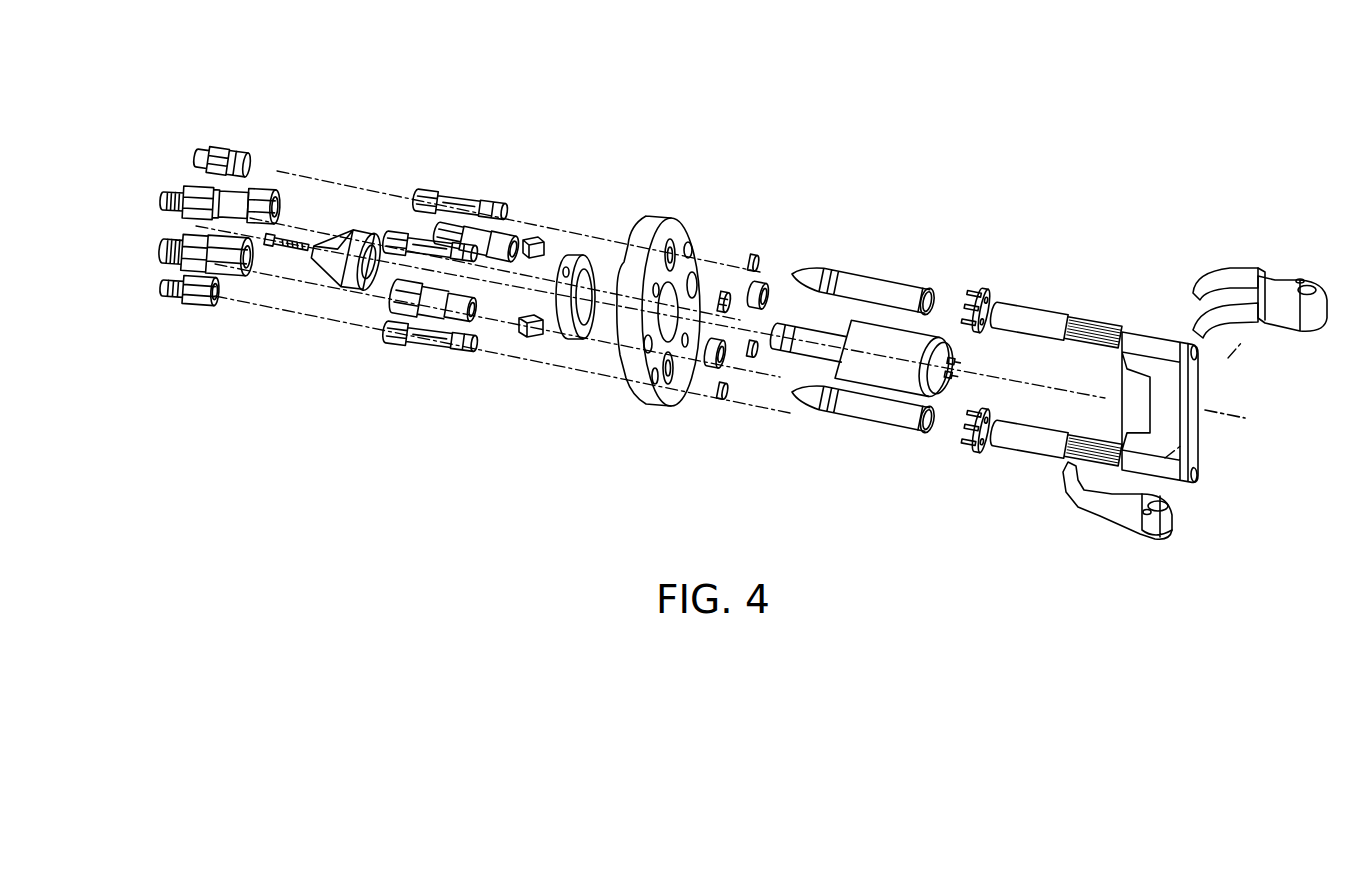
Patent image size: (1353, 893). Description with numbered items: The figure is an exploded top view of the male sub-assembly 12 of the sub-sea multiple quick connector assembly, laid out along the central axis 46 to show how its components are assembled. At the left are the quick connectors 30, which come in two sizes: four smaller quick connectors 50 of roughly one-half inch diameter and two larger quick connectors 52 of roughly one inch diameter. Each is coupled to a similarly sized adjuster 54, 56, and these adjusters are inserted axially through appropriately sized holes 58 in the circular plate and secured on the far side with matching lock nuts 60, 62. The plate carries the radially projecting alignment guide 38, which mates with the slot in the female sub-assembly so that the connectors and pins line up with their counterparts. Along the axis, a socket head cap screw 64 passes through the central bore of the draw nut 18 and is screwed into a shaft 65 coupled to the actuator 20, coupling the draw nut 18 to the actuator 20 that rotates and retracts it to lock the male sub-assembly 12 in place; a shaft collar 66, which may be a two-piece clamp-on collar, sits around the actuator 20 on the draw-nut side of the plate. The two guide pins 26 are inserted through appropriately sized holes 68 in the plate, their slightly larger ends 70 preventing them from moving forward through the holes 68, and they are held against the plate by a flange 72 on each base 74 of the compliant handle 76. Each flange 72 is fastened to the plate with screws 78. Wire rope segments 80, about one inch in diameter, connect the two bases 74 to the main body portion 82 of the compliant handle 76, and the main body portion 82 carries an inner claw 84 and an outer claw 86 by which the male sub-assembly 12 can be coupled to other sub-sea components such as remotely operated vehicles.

The male sub-assembly 12 is at (742, 359).
The draw nut 18 is at (325, 260).
The actuator 20 is at (864, 354).
The guide pins 26 is at (864, 353).
The quick connectors 30 is at (428, 265).
The alignment guide 38 is at (644, 317).
The central axis 46 is at (1225, 425).
The smaller quick connectors 50 is at (195, 197).
The larger quick connectors 52 is at (238, 190).
The adjusters 54 is at (458, 250).
The adjusters 56 is at (497, 240).
The holes 58 is at (690, 272).
The lock nuts 60 is at (752, 257).
The lock nuts 62 is at (767, 293).
The socket head cap screw 64 is at (288, 240).
The shaft 65 is at (808, 342).
The shaft collar 66 is at (578, 258).
The holes 68 is at (669, 240).
The ends 70 is at (927, 301).
The flange 72 is at (972, 376).
The base 74 is at (1040, 315).
The compliant handle 76 is at (1056, 410).
The screws 78 is at (985, 305).
The wire rope segments 80 is at (1097, 335).
The main body portion 82 is at (1150, 333).
The inner claw 84 is at (1145, 540).
The outer claw 86 is at (1290, 282).